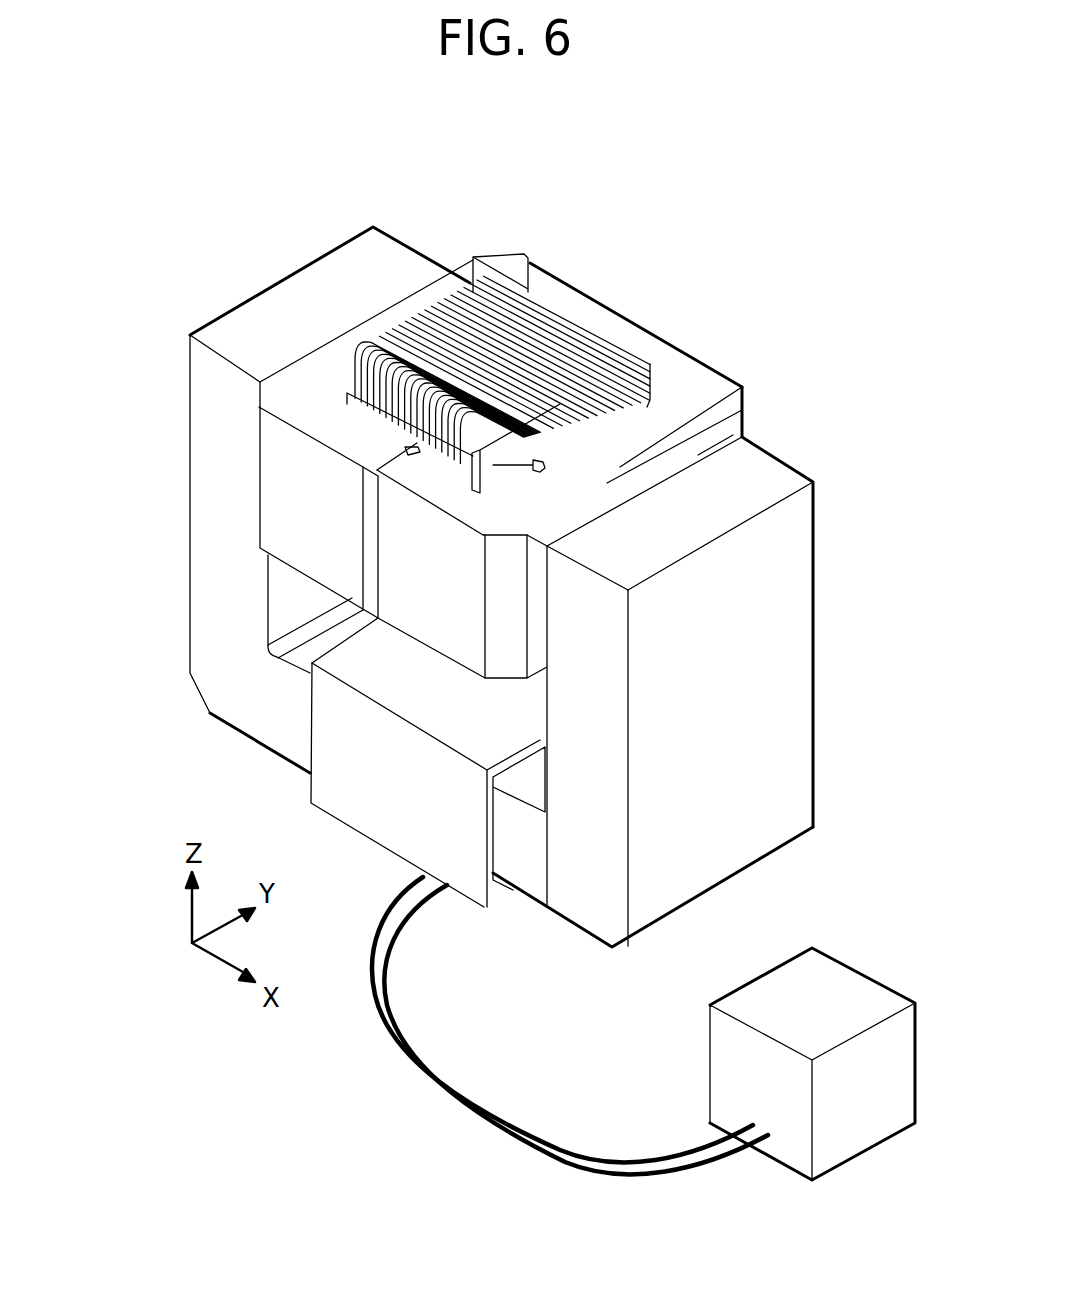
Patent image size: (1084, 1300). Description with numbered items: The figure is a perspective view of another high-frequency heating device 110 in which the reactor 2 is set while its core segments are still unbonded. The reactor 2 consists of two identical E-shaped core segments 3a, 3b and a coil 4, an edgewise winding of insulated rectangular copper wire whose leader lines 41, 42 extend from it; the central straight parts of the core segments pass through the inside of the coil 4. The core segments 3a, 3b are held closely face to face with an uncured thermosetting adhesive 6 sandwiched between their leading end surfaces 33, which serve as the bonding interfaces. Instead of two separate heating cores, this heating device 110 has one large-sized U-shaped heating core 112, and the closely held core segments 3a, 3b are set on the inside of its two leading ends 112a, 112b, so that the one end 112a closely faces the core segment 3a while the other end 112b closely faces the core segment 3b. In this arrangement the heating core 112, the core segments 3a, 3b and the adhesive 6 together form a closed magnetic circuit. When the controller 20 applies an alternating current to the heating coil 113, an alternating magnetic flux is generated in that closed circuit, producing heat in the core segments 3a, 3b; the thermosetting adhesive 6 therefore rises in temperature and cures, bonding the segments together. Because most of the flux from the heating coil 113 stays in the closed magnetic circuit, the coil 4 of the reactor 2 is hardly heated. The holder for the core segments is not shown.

The reactor 2 is at (717, 357).
The core segment 3a is at (467, 277).
The core segment 3b is at (713, 393).
The coil 4 is at (445, 322).
The thermosetting adhesive 6 is at (612, 330).
The controller 20 is at (720, 1066).
The leading end surface 33 is at (413, 450).
The leader line 41 is at (503, 270).
The leader line 42 is at (493, 466).
The high-frequency heating device 110 is at (153, 722).
The heating core 112 is at (270, 720).
The leading end 112a is at (343, 263).
The leading end 112b is at (765, 477).
The heating coil 113 is at (397, 830).